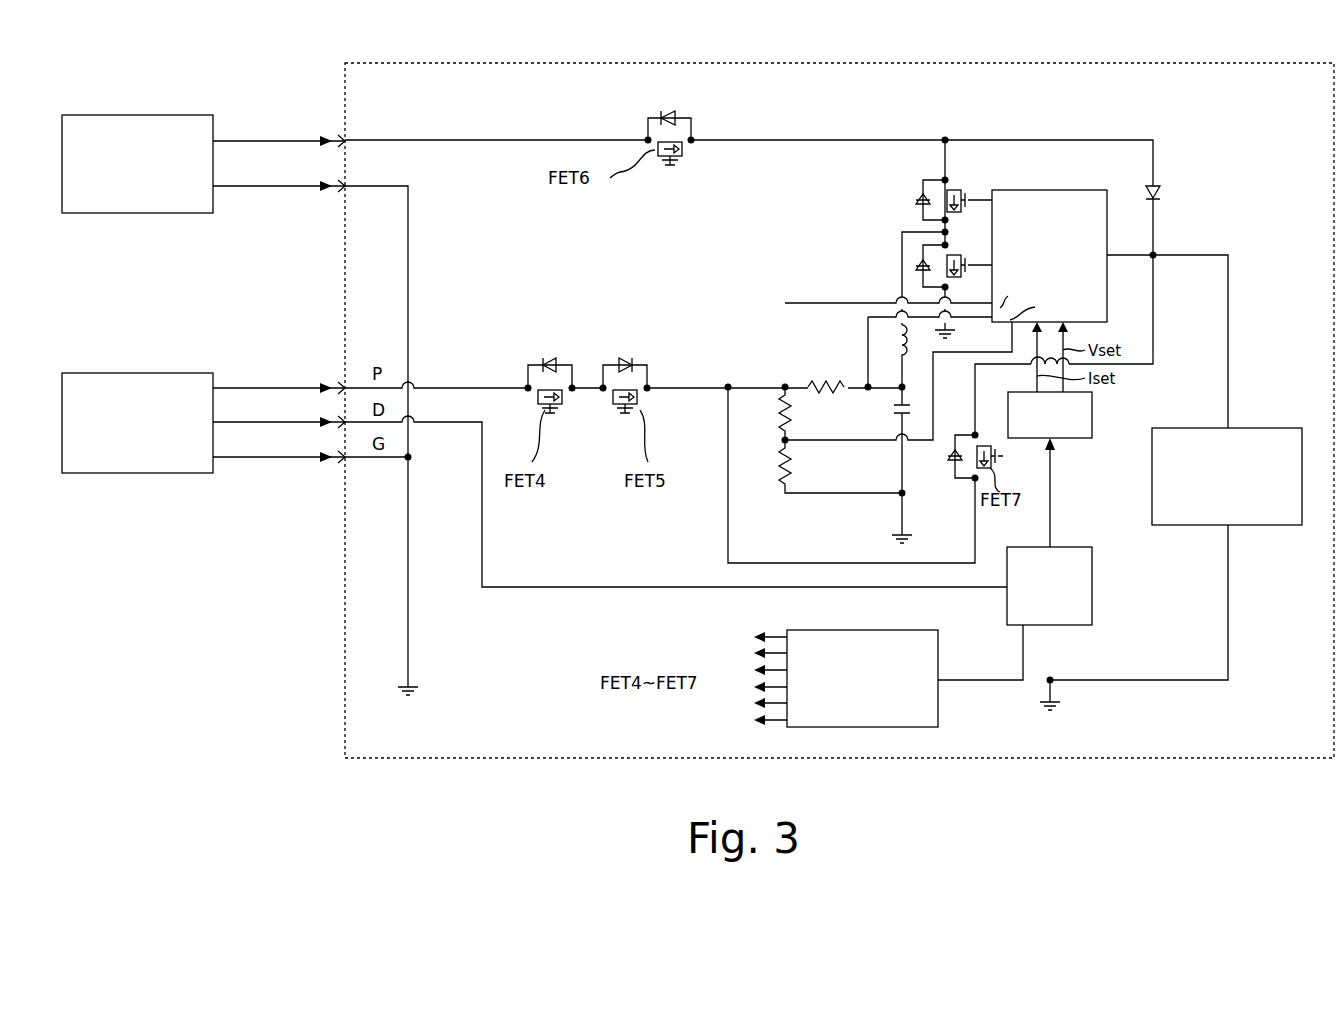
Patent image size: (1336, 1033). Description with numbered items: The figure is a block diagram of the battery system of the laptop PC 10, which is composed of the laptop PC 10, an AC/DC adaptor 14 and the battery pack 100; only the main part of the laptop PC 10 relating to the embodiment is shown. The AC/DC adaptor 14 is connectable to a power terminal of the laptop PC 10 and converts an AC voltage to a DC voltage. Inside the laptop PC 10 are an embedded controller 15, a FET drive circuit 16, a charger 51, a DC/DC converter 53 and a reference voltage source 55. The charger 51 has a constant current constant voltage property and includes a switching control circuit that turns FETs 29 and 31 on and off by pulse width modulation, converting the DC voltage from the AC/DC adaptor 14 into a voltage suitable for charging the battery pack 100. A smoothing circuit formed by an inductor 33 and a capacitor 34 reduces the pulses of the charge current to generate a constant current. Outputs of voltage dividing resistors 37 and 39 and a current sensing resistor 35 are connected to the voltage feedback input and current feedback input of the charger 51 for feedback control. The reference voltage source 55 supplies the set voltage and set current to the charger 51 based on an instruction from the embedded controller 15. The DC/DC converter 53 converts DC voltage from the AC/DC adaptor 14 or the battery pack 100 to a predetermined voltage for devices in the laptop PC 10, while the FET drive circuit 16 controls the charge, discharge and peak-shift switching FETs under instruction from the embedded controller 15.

The laptop PC 10 is at (398, 99).
The AC/DC adaptor 14 is at (168, 115).
The battery pack 100 is at (168, 373).
The FET 29 is at (950, 188).
The FET 31 is at (950, 254).
The charger 51 is at (1082, 190).
The inductor 33 is at (906, 348).
The capacitor 34 is at (906, 420).
The current sensing resistor 35 is at (828, 380).
The voltage dividing resistor 37 is at (790, 412).
The voltage dividing resistor 39 is at (790, 472).
The reference voltage source 55 is at (1092, 412).
The DC/DC converter 53 is at (1266, 428).
The embedded controller 15 is at (1092, 585).
The FET drive circuit 16 is at (900, 630).